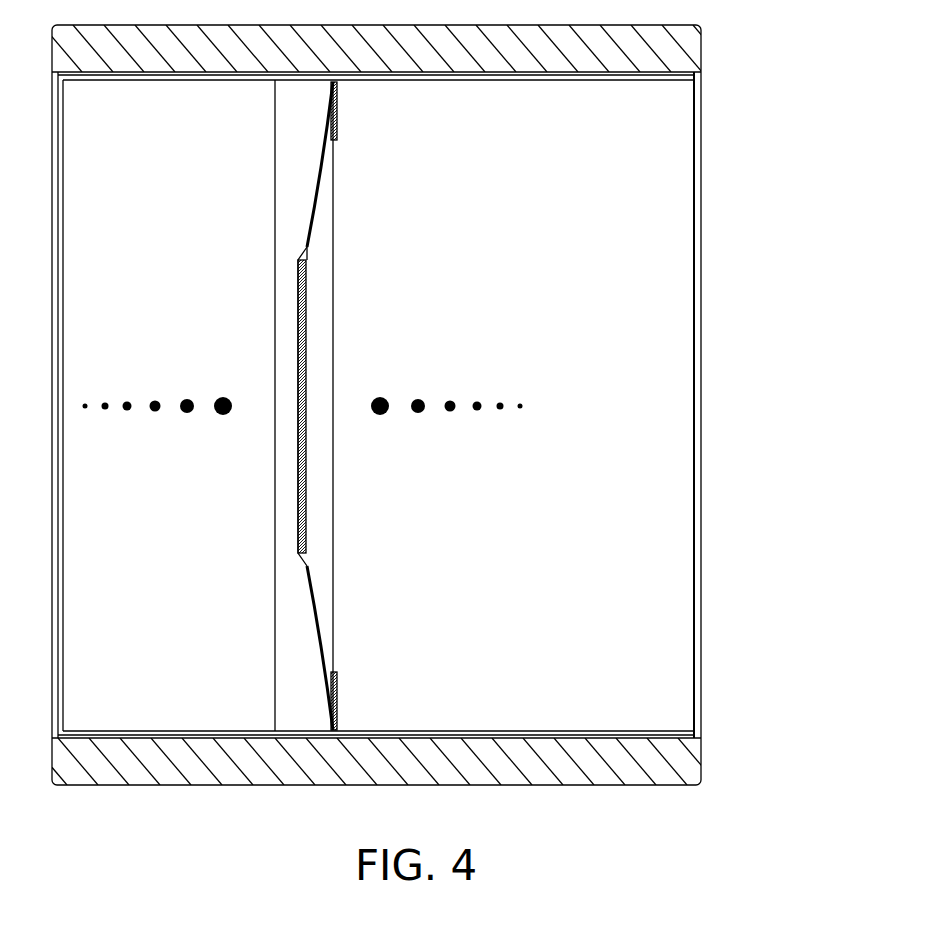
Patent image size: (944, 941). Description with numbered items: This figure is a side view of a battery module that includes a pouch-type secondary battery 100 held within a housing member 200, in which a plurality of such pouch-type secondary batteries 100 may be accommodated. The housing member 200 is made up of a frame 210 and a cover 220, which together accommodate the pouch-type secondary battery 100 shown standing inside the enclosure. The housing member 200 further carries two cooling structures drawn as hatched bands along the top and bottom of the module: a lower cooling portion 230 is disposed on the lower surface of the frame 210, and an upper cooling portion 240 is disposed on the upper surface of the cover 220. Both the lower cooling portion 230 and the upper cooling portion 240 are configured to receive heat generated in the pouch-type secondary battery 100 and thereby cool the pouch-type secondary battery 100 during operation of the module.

The pouch-type secondary battery 100 is at (362, 229).
The housing member 200 is at (438, 405).
The frame 210 is at (695, 445).
The cover 220 is at (502, 75).
The lower cooling portion 230 is at (550, 762).
The upper cooling portion 240 is at (553, 52).